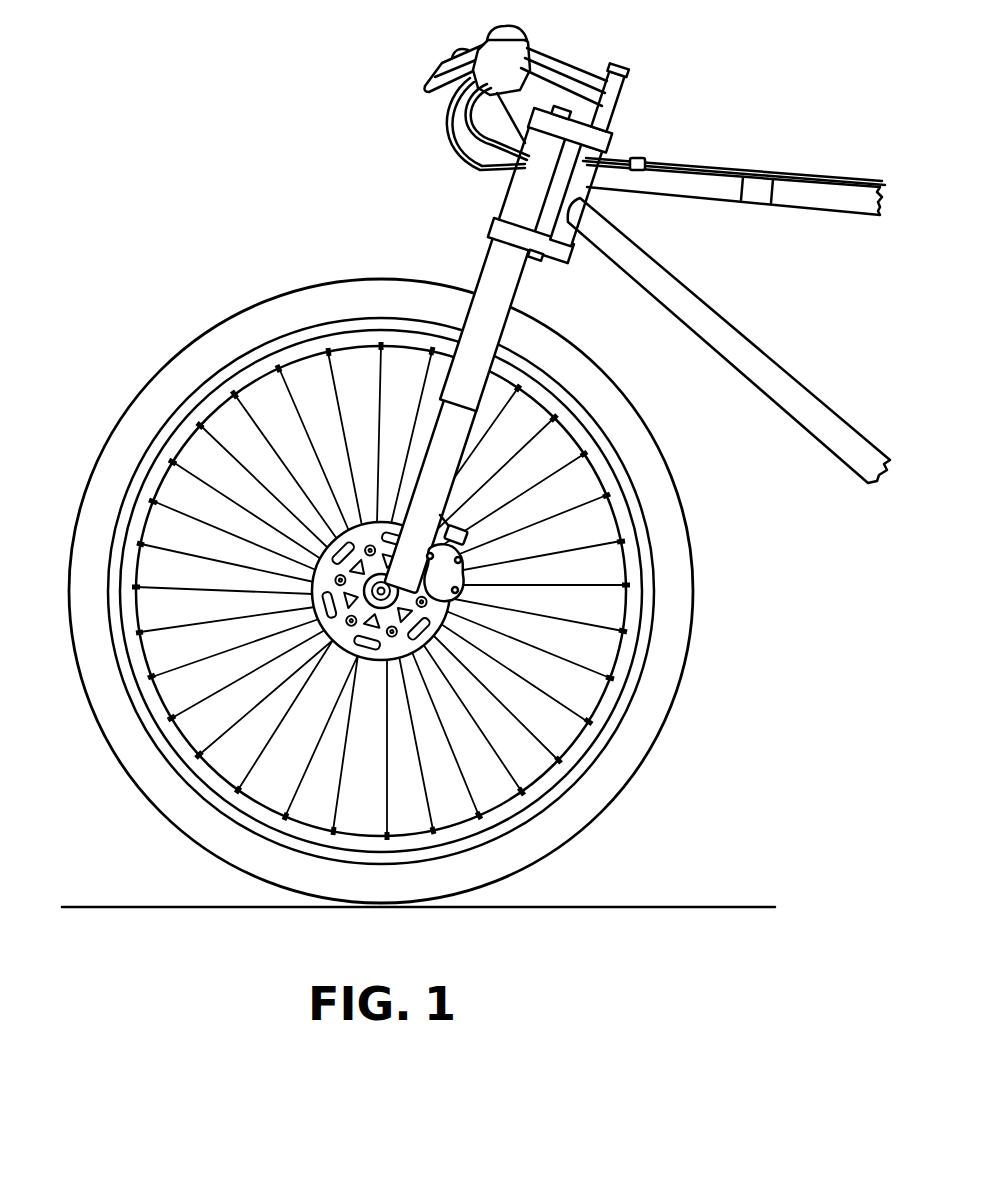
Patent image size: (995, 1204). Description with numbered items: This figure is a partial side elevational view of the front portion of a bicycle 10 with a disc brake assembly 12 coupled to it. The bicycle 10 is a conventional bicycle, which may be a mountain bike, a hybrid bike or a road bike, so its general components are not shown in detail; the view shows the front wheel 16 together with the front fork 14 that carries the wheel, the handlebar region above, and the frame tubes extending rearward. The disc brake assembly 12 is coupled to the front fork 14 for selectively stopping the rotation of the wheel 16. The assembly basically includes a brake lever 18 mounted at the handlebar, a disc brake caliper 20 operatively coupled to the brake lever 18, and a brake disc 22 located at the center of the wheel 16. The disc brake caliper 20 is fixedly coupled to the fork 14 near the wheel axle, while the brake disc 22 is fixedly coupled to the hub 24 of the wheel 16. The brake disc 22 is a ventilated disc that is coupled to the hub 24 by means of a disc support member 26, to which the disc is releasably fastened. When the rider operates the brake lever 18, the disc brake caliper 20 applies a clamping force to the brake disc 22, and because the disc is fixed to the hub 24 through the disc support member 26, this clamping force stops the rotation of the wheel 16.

The bicycle 10 is at (292, 112).
The disc brake assembly 12 is at (475, 640).
The front fork 14 is at (478, 270).
The wheel 16 is at (193, 337).
The brake lever 18 is at (445, 65).
The disc brake caliper 20 is at (478, 553).
The brake disc 22 is at (402, 677).
The hub 24 is at (343, 630).
The disc support member 26 is at (360, 640).